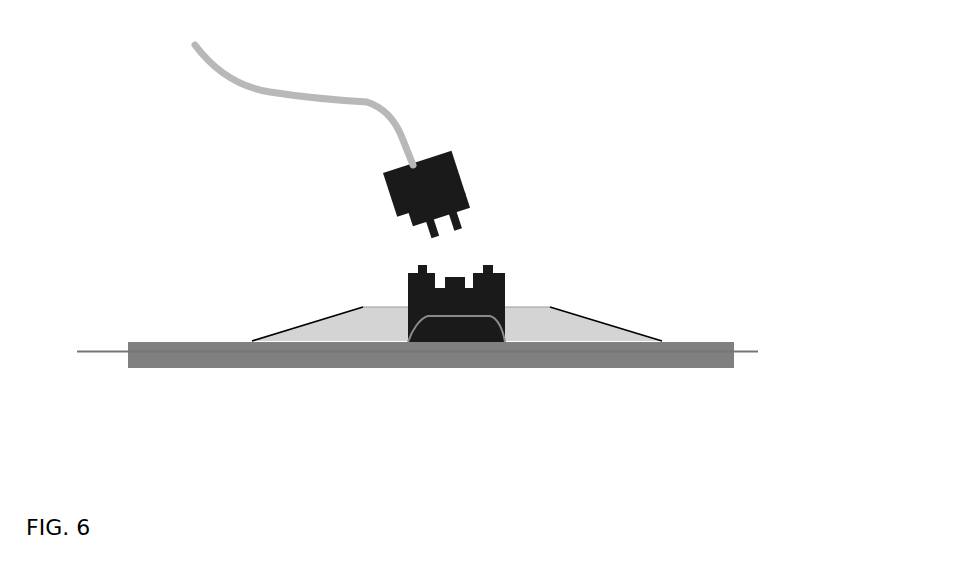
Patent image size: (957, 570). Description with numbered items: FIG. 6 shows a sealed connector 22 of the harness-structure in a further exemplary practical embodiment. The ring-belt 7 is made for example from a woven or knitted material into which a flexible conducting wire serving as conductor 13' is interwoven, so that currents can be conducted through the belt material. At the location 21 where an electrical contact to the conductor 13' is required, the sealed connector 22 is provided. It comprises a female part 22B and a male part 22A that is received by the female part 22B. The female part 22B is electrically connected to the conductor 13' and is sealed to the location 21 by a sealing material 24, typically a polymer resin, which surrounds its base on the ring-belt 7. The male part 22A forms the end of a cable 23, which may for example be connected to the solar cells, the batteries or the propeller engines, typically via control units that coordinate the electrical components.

The ring-belt 7 is at (665, 368).
The conductor 13' is at (417, 415).
The location 21 is at (439, 390).
The sealed connector 22 is at (569, 208).
The male part 22A is at (452, 160).
The female part 22B is at (505, 280).
The cable 23 is at (392, 115).
The sealing material 24 is at (335, 322).